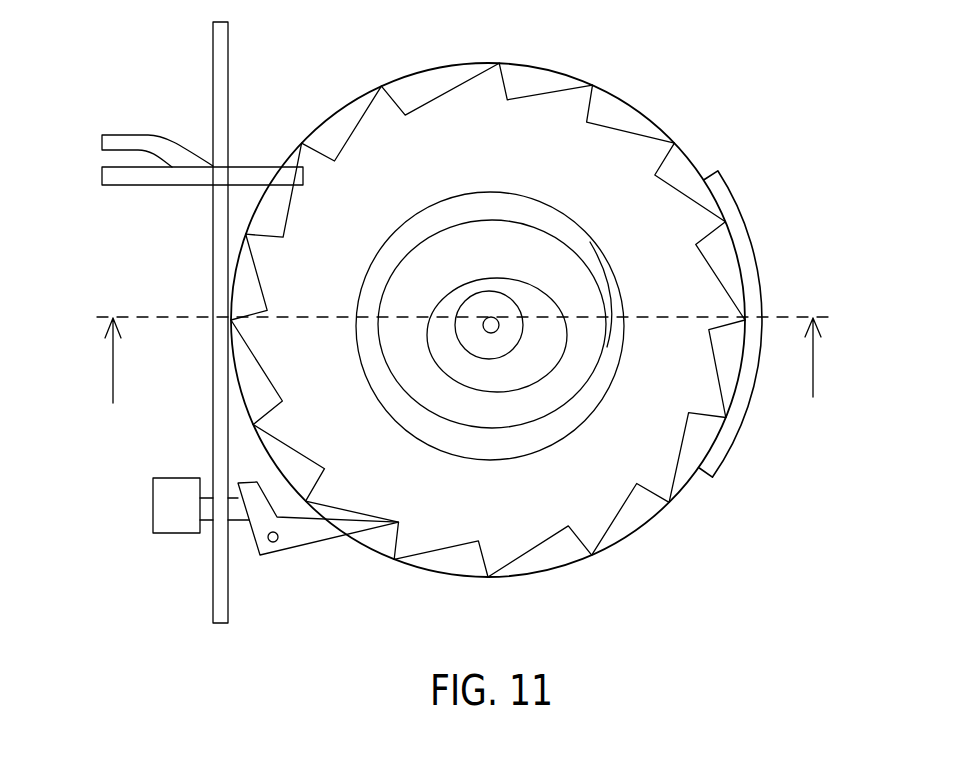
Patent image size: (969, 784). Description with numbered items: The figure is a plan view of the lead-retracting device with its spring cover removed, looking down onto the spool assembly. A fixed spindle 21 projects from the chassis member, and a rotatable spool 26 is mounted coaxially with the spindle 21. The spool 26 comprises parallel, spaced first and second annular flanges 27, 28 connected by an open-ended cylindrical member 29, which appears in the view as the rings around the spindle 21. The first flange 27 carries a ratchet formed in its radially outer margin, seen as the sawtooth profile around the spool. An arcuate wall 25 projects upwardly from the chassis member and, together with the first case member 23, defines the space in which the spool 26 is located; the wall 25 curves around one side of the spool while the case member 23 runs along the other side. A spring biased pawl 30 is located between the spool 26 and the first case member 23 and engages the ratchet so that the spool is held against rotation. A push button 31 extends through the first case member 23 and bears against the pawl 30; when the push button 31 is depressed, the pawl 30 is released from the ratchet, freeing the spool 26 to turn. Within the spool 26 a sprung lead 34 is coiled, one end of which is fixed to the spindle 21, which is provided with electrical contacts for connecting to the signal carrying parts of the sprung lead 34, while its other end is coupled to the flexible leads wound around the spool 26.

The fixed spindle 21 is at (516, 302).
The first case member 23 is at (223, 602).
The arcuate wall 25 is at (730, 437).
The rotatable spool 26 is at (477, 523).
The first annular flange 27 is at (653, 150).
The second annular flange 28 is at (648, 527).
The open-ended cylindrical member 29 is at (553, 214).
The spring biased pawl 30 is at (313, 537).
The push button 31 is at (158, 518).
The sprung lead 34 is at (604, 347).